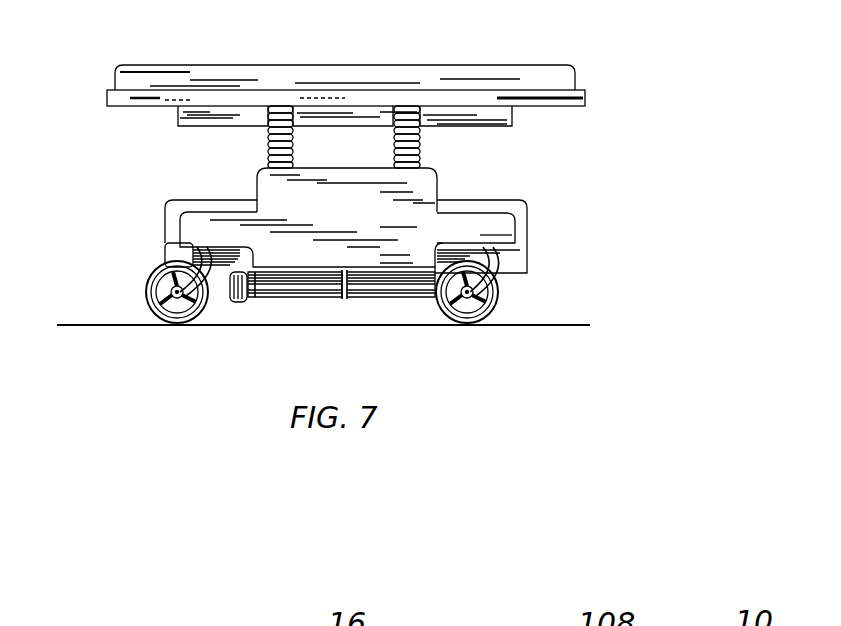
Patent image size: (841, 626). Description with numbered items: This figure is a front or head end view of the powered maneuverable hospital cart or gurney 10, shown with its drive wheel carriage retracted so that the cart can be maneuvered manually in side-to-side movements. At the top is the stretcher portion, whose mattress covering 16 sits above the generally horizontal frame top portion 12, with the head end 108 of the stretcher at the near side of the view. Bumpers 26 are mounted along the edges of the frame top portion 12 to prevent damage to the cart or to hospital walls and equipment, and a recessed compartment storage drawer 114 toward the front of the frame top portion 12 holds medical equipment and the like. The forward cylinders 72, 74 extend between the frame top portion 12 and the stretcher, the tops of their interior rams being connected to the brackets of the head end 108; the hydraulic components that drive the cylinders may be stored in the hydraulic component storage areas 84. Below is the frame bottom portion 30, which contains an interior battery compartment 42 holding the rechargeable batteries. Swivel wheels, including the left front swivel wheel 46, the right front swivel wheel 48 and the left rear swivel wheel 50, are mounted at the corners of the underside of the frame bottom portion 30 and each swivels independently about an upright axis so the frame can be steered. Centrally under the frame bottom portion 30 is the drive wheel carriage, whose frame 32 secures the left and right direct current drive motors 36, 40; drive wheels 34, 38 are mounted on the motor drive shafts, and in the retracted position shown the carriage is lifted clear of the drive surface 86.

The hospital gurney 10 is at (660, 58).
The mattress covering 16 is at (293, 75).
The bumpers 26 is at (143, 97).
The head end 108 is at (553, 73).
The frame top portion 12 is at (182, 97).
The recessed compartment storage drawer 114 is at (510, 110).
The forward cylinder 72 is at (293, 139).
The forward cylinder 74 is at (420, 133).
The hydraulic component storage areas 84 is at (237, 212).
The frame bottom portion 30 is at (167, 223).
The battery compartment 42 is at (500, 230).
The left rear swivel wheel 50 is at (138, 255).
The left front swivel wheel 46 is at (143, 293).
The right front swivel wheel 48 is at (507, 298).
The drive wheel 38 is at (428, 303).
The drive wheel 34 is at (232, 303).
The left direct current drive motor 36 is at (297, 298).
The frame 32 is at (340, 298).
The right direct current drive motor 40 is at (397, 300).
The drive surface 86 is at (540, 323).